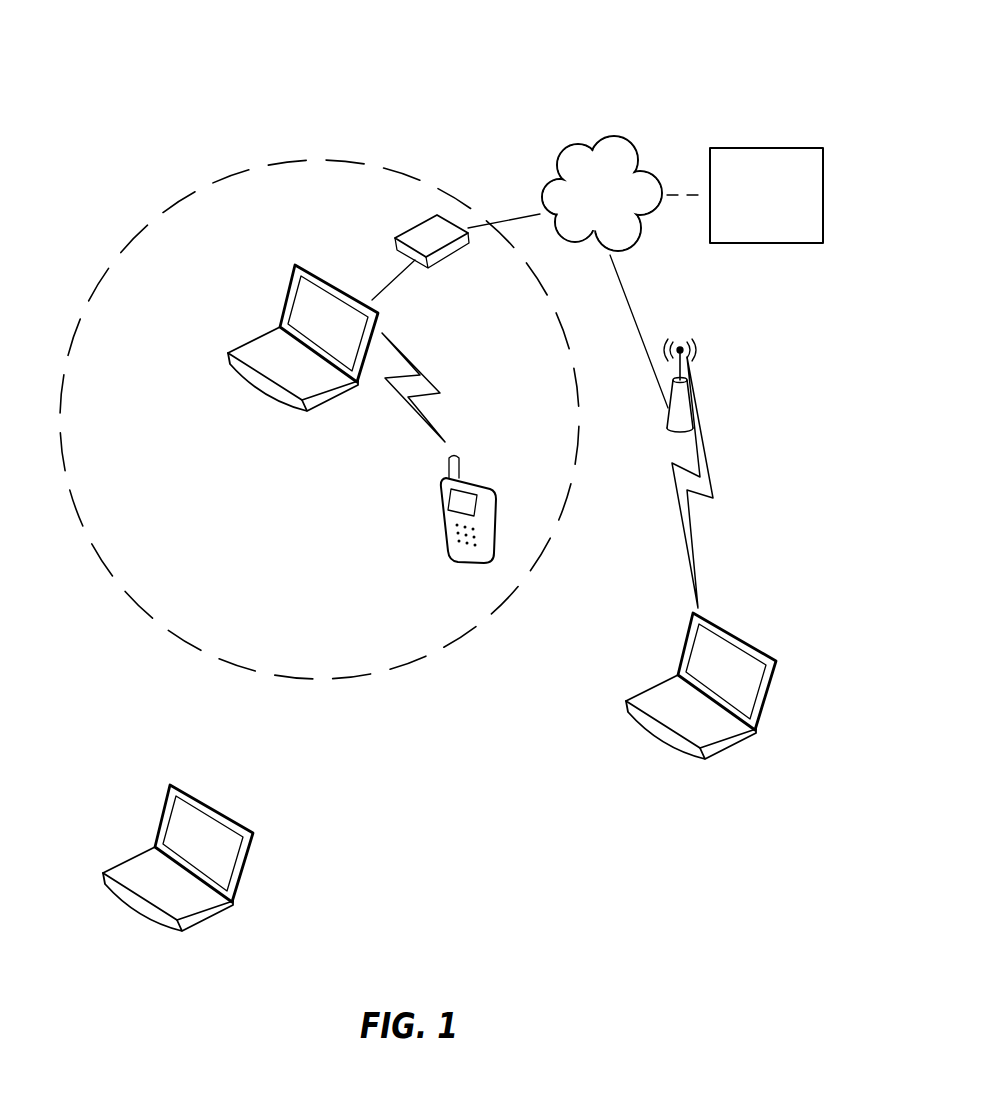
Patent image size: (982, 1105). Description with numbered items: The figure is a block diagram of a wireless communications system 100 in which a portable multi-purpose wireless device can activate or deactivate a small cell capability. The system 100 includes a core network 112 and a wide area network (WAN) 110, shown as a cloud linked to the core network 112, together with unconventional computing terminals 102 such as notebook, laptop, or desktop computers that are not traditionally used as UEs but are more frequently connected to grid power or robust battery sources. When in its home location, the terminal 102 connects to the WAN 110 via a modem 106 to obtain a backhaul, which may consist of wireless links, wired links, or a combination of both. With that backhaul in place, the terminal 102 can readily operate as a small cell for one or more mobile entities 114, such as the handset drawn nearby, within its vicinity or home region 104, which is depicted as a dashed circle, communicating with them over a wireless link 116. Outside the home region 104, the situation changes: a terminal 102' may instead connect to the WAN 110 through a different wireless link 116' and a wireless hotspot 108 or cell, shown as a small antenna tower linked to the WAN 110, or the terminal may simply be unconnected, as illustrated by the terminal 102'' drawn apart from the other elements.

The system 100 is at (473, 58).
The unconventional computing terminal 102 is at (321, 317).
The terminal away from home region 102' is at (706, 666).
The unconnected terminal 102'' is at (187, 835).
The home region 104 is at (242, 169).
The modem 106 is at (458, 253).
The wireless hotspot 108 is at (668, 414).
The wide area network (WAN) 110 is at (609, 135).
The core network 112 is at (767, 146).
The mobile entity 114 is at (462, 470).
The wireless link 116 is at (442, 387).
The different wireless link 116' is at (734, 482).